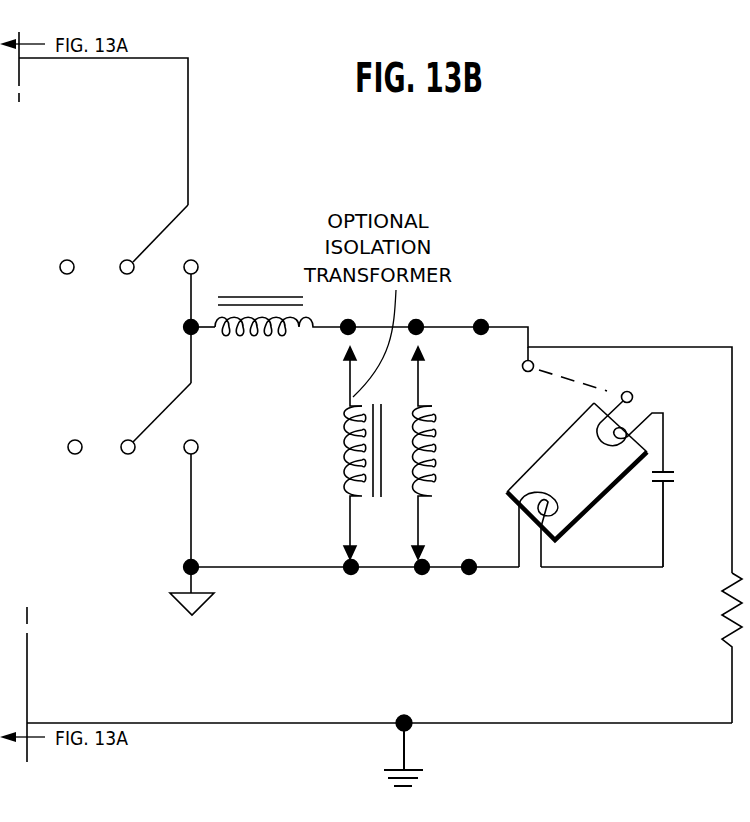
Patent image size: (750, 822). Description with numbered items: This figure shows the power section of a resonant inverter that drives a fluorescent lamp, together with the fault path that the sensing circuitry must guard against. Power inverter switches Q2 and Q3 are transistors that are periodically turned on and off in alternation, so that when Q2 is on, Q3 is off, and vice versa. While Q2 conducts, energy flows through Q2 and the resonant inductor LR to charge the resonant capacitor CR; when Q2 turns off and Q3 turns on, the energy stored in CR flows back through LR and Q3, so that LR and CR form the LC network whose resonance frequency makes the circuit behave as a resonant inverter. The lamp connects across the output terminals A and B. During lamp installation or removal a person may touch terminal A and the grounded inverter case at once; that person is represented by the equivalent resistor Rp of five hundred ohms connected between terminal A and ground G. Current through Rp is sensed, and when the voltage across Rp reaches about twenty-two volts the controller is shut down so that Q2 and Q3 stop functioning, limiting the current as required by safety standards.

The transistor Q2 is at (129, 239).
The transistor Q3 is at (133, 418).
The resonant inductor LR is at (269, 301).
The terminal A is at (482, 311).
The node B is at (468, 584).
The resonant capacitor CR is at (683, 516).
The equivalent resistor Rp is at (719, 648).
The ground G is at (416, 753).